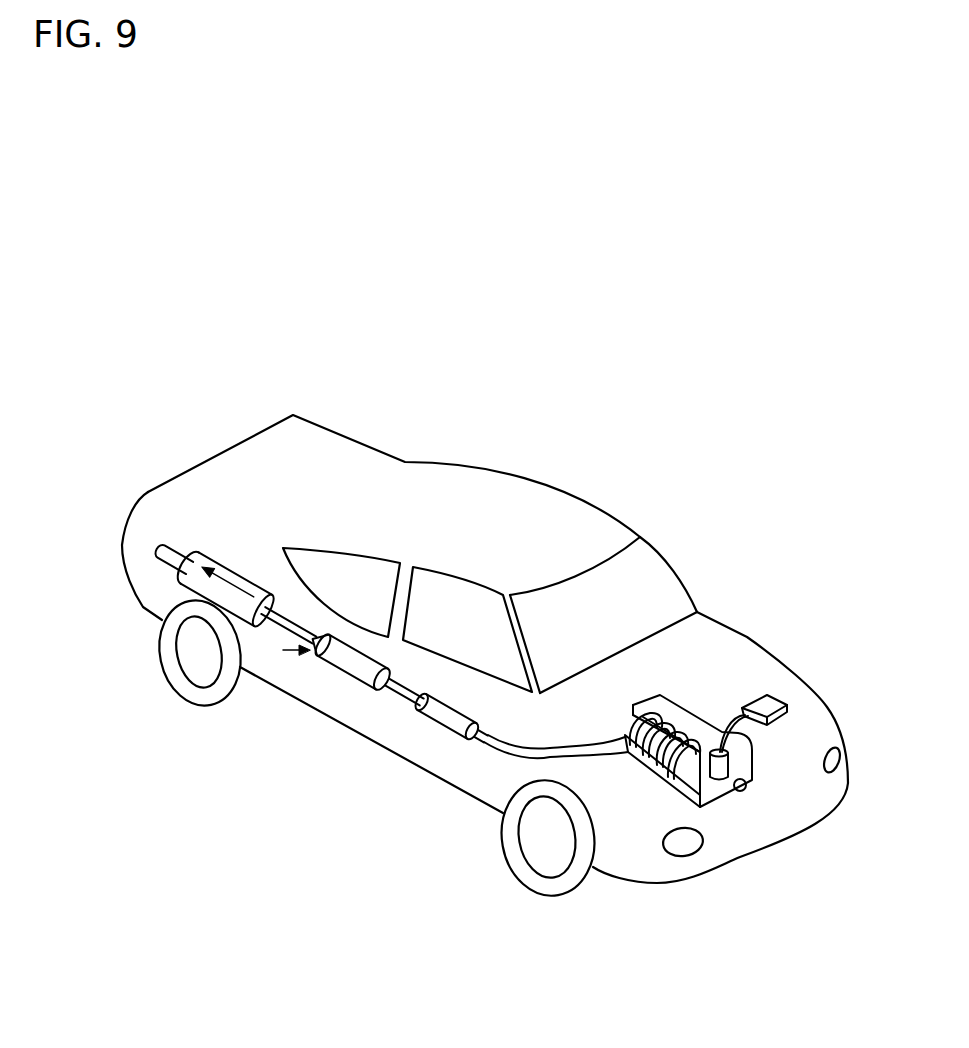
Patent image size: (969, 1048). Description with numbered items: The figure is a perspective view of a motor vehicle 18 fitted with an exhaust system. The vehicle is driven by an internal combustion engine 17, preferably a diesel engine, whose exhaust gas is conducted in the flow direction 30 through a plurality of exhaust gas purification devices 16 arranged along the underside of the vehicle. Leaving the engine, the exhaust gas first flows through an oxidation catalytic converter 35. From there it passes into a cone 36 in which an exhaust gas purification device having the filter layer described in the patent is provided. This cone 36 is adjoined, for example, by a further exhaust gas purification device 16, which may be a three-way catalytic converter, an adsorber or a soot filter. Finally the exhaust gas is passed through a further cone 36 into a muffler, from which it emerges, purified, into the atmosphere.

The motor vehicle 18 is at (748, 662).
The internal combustion engine 17 is at (742, 768).
The flow direction 30 is at (222, 587).
The exhaust gas purification device 16 is at (337, 662).
The cone 36 is at (282, 650).
The oxidation catalytic converter 35 is at (443, 717).